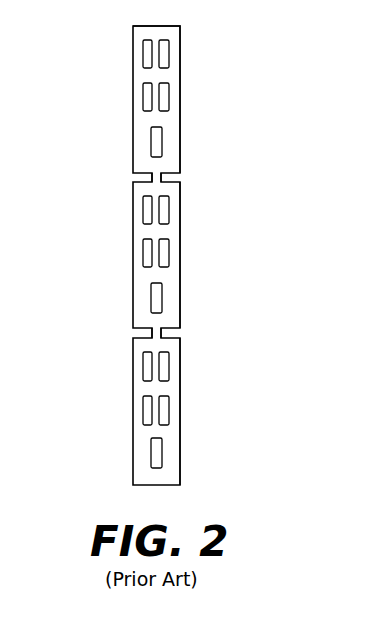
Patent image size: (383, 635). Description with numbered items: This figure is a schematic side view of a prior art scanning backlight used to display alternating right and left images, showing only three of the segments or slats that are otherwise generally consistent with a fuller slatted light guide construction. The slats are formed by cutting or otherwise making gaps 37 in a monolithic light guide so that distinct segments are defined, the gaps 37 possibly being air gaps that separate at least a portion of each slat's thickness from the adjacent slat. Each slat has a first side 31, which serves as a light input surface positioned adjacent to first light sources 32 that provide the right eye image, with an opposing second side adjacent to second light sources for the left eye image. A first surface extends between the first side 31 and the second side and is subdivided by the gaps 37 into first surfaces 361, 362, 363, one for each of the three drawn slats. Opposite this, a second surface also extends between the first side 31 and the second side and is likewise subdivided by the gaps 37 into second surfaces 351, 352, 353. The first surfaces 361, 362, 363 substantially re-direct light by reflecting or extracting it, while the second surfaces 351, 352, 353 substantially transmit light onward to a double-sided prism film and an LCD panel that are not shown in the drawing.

The second surface 351 is at (133, 104).
The second surface 352 is at (133, 243).
The second surface 353 is at (133, 403).
The first surface 361 is at (180, 31).
The first surface 362 is at (180, 201).
The first surface 363 is at (180, 355).
The first side 31 is at (163, 139).
The first light sources 32 is at (165, 372).
The gaps 37 is at (181, 178).